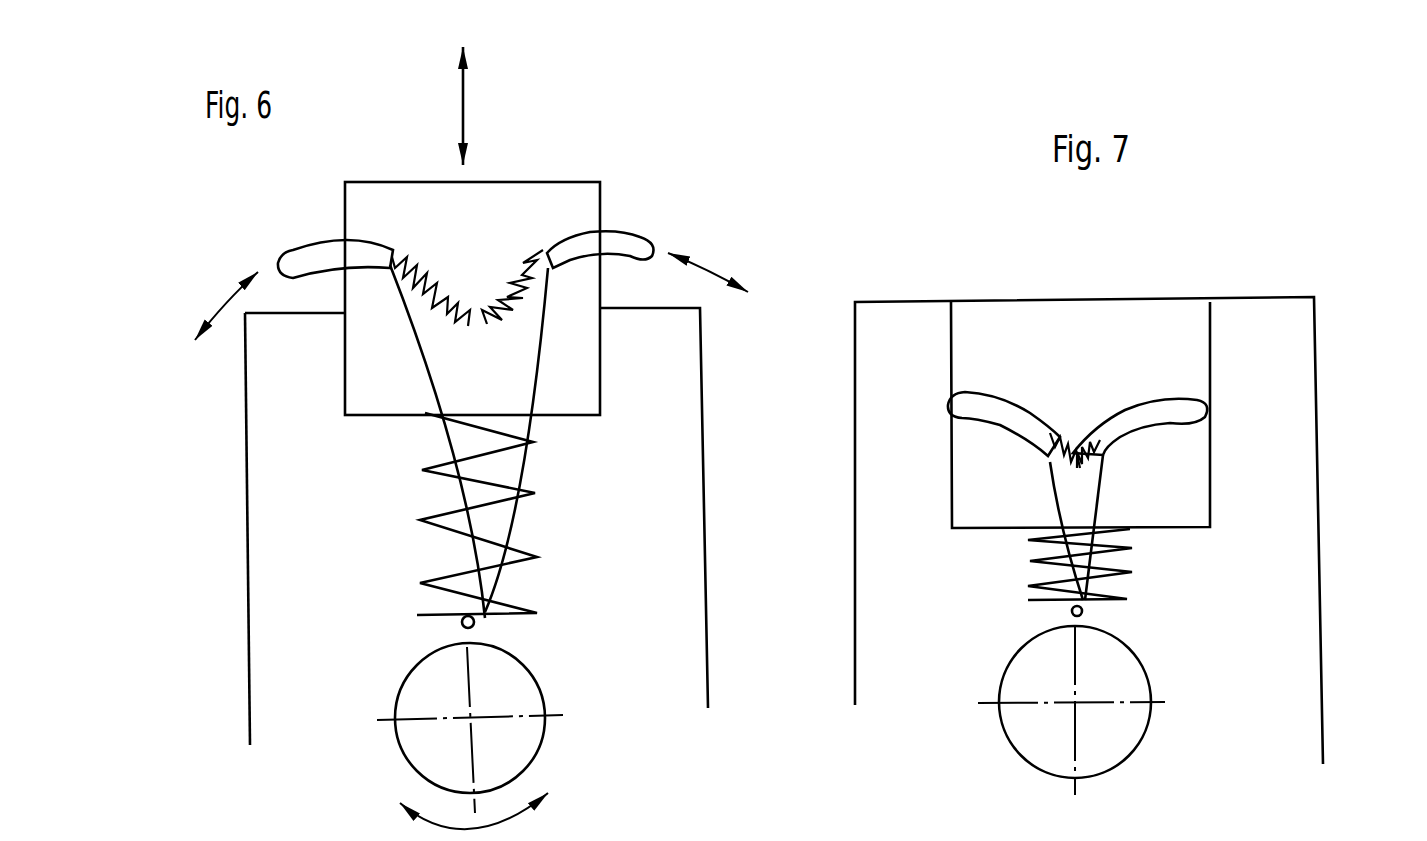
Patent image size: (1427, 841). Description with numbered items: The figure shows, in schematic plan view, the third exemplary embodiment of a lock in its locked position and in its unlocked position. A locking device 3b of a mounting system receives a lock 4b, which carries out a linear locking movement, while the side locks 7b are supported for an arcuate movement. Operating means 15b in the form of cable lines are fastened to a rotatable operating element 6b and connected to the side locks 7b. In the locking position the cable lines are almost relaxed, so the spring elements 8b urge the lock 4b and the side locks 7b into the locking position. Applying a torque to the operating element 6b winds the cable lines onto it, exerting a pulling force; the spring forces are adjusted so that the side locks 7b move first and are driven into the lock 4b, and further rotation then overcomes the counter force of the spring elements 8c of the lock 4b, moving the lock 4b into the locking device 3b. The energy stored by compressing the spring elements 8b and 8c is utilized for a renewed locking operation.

In FIG. 6, the locking device 3b is at (641, 588).
In FIG. 7, the locking device 3b is at (890, 423).
In FIG. 6, the lock 4b is at (368, 394).
In FIG. 7, the lock 4b is at (973, 492).
In FIG. 6, the operating element 6b is at (422, 693).
In FIG. 7, the operating element 6b is at (1030, 715).
In FIG. 6, the side locks 7b is at (307, 254).
In FIG. 7, the side locks 7b is at (973, 407).
In FIG. 6, the spring elements 8b is at (432, 283).
In FIG. 7, the spring elements 8b is at (1053, 437).
In FIG. 6, the spring elements of the lock 8c is at (447, 512).
In FIG. 7, the spring elements of the lock 8c is at (1110, 570).
In FIG. 6, the operating means 15b is at (408, 328).
In FIG. 7, the operating means 15b is at (1100, 500).